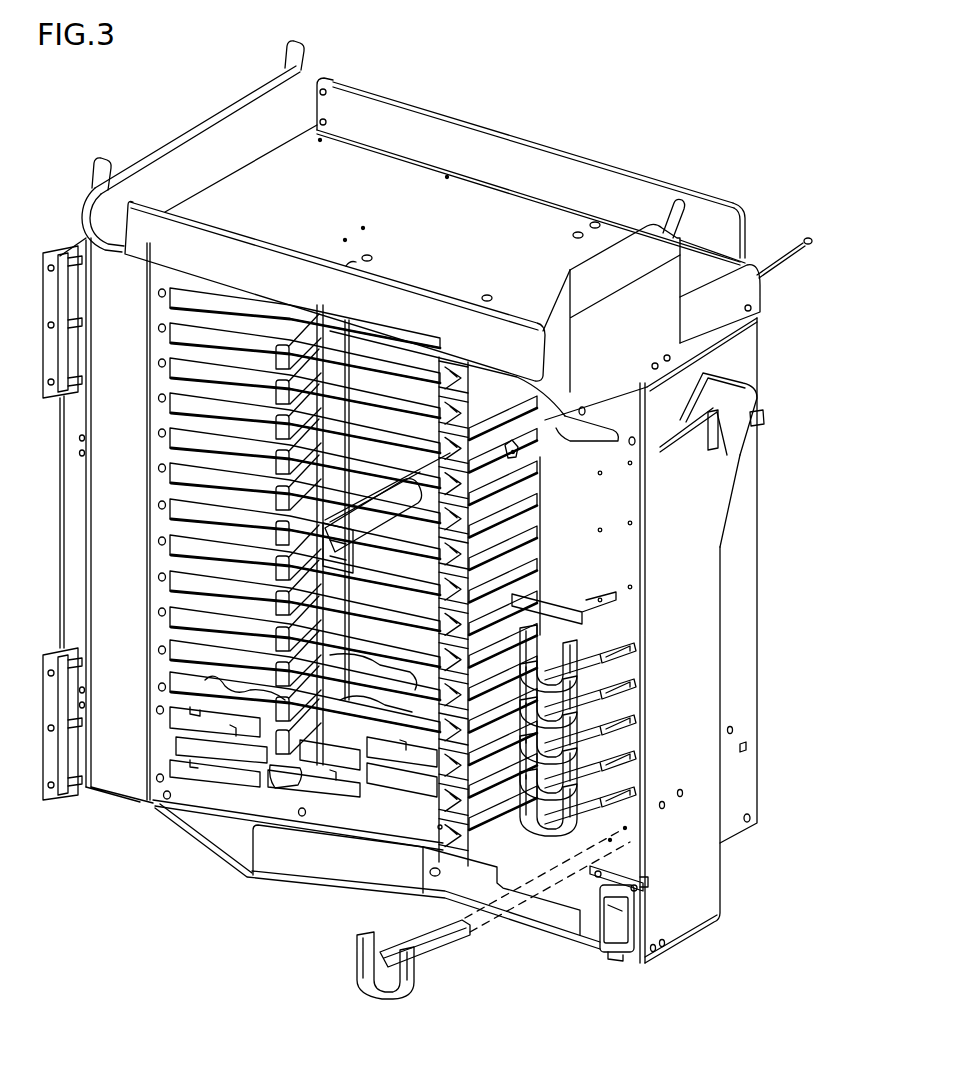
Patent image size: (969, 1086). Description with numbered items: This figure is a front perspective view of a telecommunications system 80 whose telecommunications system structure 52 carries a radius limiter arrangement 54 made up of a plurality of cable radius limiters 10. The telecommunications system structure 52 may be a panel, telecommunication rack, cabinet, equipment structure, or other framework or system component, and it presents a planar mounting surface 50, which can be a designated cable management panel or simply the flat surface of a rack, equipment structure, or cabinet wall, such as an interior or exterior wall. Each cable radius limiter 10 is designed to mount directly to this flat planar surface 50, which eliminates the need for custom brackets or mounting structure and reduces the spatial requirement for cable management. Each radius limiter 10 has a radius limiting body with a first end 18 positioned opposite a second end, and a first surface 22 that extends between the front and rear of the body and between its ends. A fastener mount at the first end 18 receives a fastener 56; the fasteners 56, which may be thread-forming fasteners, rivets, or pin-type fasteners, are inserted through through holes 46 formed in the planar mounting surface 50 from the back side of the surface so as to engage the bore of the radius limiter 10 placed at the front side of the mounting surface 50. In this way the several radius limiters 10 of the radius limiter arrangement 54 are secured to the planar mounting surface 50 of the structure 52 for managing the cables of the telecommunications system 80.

The cable radius limiter 10 is at (560, 551).
The first end 18 is at (523, 457).
The first surface 22 is at (393, 525).
The through holes 46 is at (521, 428).
The planar mounting surface 50 is at (607, 490).
The telecommunications system structure 52 is at (790, 553).
The radius limiter arrangement 54 is at (478, 322).
The fastener 56 is at (806, 250).
The telecommunications system 80 is at (70, 145).